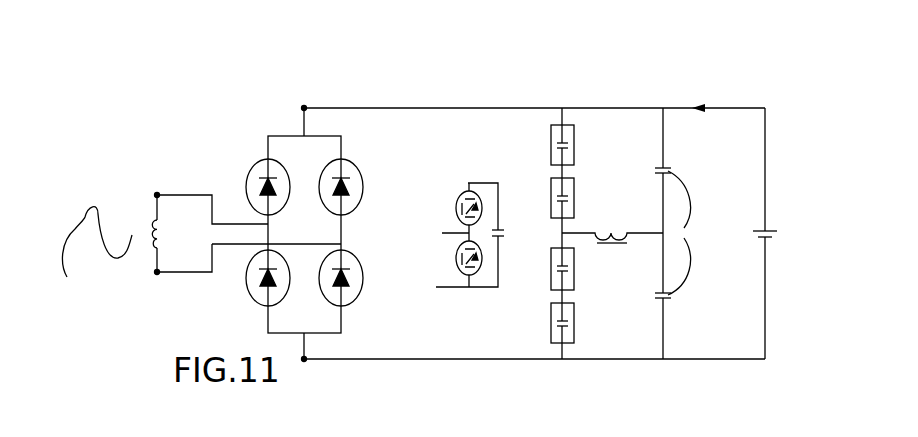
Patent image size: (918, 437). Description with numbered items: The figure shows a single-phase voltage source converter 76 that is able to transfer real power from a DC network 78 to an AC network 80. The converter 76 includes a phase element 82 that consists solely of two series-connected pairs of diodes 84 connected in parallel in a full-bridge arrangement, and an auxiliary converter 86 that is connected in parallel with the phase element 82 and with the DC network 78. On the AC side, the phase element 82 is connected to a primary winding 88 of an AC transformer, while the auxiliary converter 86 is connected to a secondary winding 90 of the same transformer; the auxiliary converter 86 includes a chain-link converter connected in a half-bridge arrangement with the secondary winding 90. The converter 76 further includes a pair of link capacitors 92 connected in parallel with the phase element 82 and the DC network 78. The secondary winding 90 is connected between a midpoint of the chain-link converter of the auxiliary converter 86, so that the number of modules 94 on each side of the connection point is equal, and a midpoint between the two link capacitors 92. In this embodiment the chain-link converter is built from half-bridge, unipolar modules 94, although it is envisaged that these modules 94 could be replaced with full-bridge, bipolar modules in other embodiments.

The single-phase voltage source converter 76 is at (168, 148).
The DC network 78 is at (768, 230).
The AC network 80 is at (94, 254).
The phase element 82 is at (327, 130).
The diodes 84 is at (256, 188).
The auxiliary converter 86 is at (532, 144).
The primary winding 88 is at (149, 247).
The secondary winding 90 is at (603, 235).
The link capacitors 92 is at (681, 233).
The modules 94 is at (436, 266).